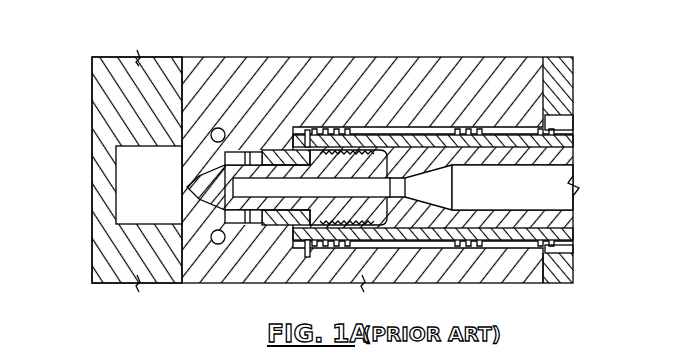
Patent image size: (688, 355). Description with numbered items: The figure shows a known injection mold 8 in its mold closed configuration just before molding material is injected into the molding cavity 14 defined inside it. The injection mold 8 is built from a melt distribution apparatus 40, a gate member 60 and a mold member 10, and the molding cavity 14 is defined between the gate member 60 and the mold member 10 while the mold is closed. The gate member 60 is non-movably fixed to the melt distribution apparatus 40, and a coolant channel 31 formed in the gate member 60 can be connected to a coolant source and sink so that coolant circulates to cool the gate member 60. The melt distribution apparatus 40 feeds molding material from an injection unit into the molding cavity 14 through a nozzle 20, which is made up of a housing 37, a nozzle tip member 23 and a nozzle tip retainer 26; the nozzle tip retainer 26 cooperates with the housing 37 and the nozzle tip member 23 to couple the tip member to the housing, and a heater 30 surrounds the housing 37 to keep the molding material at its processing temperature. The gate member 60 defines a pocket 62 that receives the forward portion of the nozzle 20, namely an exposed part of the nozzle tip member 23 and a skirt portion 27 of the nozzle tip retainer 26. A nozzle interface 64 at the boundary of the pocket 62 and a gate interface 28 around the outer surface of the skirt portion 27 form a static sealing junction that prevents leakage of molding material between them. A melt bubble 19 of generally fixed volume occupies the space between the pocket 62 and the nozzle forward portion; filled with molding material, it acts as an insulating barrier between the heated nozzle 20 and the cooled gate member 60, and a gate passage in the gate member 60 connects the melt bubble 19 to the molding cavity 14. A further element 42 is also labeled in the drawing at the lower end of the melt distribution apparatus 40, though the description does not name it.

The injection mold 8 is at (58, 124).
The mold member 10 is at (148, 105).
The molding cavity 14 is at (158, 193).
The melt bubble 19 is at (206, 156).
The nozzle 20 is at (582, 126).
The nozzle tip member 23 is at (245, 216).
The nozzle tip retainer 26 is at (288, 232).
The skirt portion 27 is at (295, 242).
The gate interface 28 is at (268, 148).
The heater 30 is at (522, 125).
The coolant channel 31 is at (213, 244).
The housing 37 is at (430, 153).
The melt distribution apparatus 40 is at (566, 81).
The lower end plate 42 is at (543, 250).
The gate member 60 is at (532, 81).
The pocket 62 is at (228, 220).
The nozzle interface 64 is at (283, 150).